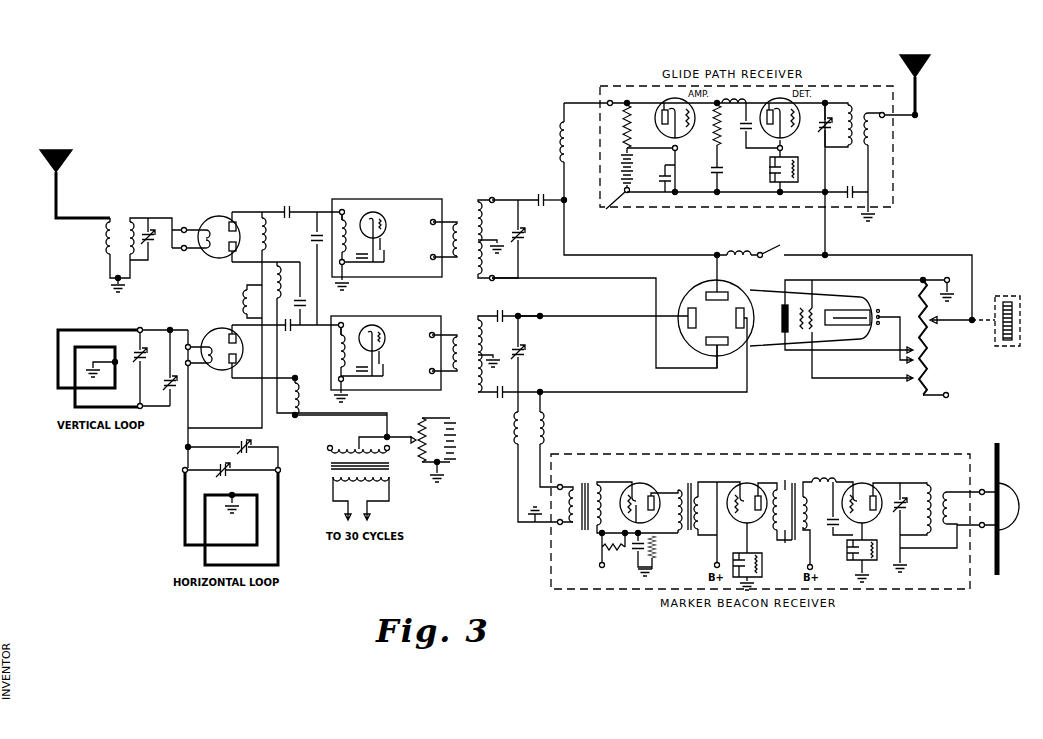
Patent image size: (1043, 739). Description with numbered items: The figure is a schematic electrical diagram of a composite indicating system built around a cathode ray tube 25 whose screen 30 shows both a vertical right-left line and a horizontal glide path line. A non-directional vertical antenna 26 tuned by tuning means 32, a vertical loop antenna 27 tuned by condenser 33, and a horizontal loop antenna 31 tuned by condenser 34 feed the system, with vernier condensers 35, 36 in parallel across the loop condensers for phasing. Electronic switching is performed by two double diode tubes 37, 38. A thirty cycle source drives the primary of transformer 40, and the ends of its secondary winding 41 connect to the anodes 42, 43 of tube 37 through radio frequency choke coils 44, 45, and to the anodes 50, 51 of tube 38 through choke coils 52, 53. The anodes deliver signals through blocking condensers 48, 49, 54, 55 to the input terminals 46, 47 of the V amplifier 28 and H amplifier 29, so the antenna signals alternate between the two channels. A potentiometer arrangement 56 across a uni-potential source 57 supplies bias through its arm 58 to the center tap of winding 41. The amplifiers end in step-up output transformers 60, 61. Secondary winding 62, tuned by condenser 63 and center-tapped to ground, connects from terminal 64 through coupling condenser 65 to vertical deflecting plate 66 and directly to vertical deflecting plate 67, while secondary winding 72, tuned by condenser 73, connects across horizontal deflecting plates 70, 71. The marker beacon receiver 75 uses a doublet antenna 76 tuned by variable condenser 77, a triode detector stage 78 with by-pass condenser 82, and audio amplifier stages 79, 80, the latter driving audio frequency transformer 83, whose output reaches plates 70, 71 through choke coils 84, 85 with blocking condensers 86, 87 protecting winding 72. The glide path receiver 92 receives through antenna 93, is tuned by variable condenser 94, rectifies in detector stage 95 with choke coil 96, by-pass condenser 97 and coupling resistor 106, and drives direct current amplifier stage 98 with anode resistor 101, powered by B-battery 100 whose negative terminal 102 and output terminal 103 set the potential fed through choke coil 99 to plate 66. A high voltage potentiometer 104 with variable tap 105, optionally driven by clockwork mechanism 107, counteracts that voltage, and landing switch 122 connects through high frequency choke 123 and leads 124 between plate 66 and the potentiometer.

The cathode ray tube 25 is at (780, 347).
The vertical antenna 26 is at (72, 196).
The vertical loop antenna 27 is at (58, 362).
The V amplifier 28 is at (418, 199).
The H amplifier 29 is at (412, 316).
The screen 30 is at (700, 284).
The horizontal loop antenna 31 is at (185, 500).
The tuning means 32 is at (153, 228).
The tuning condenser 33 is at (146, 358).
The tuning condenser 34 is at (228, 476).
The vernier tuning condenser 35 is at (177, 393).
The vernier tuning condenser 36 is at (242, 440).
The double rectifier switching tube 37 is at (210, 221).
The loop antenna switching tube 38 is at (210, 332).
The transformer 40 is at (333, 479).
The secondary winding 41 is at (330, 452).
The anode 42 is at (236, 222).
The anode 43 is at (228, 253).
The radio frequency choke coil 44 is at (266, 238).
The radio frequency choke coil 45 is at (272, 276).
The input terminal of V amplifier 46 is at (343, 210).
The input terminal of H amplifier 47 is at (342, 323).
The blocking condenser 48 is at (290, 206).
The blocking condenser 49 is at (306, 303).
The anode 50 is at (236, 334).
The anode 51 is at (228, 364).
The radio frequency choke coil 52 is at (244, 302).
The radio frequency choke coil 53 is at (299, 398).
The blocking condenser 54 is at (288, 331).
The blocking condenser 55 is at (313, 240).
The potentiometer arrangement 56 is at (434, 463).
The uni-potential source 57 is at (456, 443).
The potentiometer arm 58 is at (420, 436).
The output transformer 60 is at (462, 218).
The output transformer 61 is at (470, 318).
The secondary winding 62 is at (481, 232).
The tuning condenser 63 is at (522, 238).
The terminal 64 is at (493, 198).
The coupling condenser 65 is at (541, 194).
The vertical deflecting plate 66 is at (724, 290).
The vertical deflecting plate 67 is at (719, 349).
The horizontal deflecting plate 70 is at (697, 317).
The horizontal deflecting plate 71 is at (736, 318).
The secondary winding 72 is at (476, 366).
The tuning condenser 73 is at (515, 350).
The marker beacon receiver 75 is at (612, 591).
The doublet antenna 76 is at (959, 509).
The variable condenser 77 is at (898, 515).
The triode detector stage 78 is at (852, 484).
The first audio frequency amplifier stage 79 is at (742, 485).
The second audio frequency amplifier stage 80 is at (633, 486).
The by-pass condenser 82 is at (832, 528).
The audio frequency transformer 83 is at (578, 526).
The radio frequency choke coil 84 is at (515, 432).
The radio frequency choke coil 85 is at (546, 428).
The blocking condenser 86 is at (500, 396).
The blocking condenser 87 is at (505, 310).
The glide path receiver 92 is at (627, 85).
The antenna 93 is at (918, 93).
The variable condenser 94 is at (820, 127).
The detector stage 95 is at (766, 100).
The radio frequency choke coil 96 is at (733, 101).
The by-pass condenser 97 is at (746, 131).
The direct current amplifier stage 98 is at (665, 98).
The radio frequency choke coil 99 is at (562, 138).
The B-battery 100 is at (620, 171).
The anode resistor 101 is at (622, 119).
The negative terminal 102 is at (615, 210).
The output terminal 103 is at (608, 102).
The high voltage potentiometer 104 is at (930, 352).
The variable tap 105 is at (945, 322).
The coupling resistor 106 is at (714, 131).
The clockwork mechanism 107 is at (1008, 296).
The landing switch 122 is at (775, 253).
The high frequency choke 123 is at (755, 247).
The leads 124 is at (806, 255).